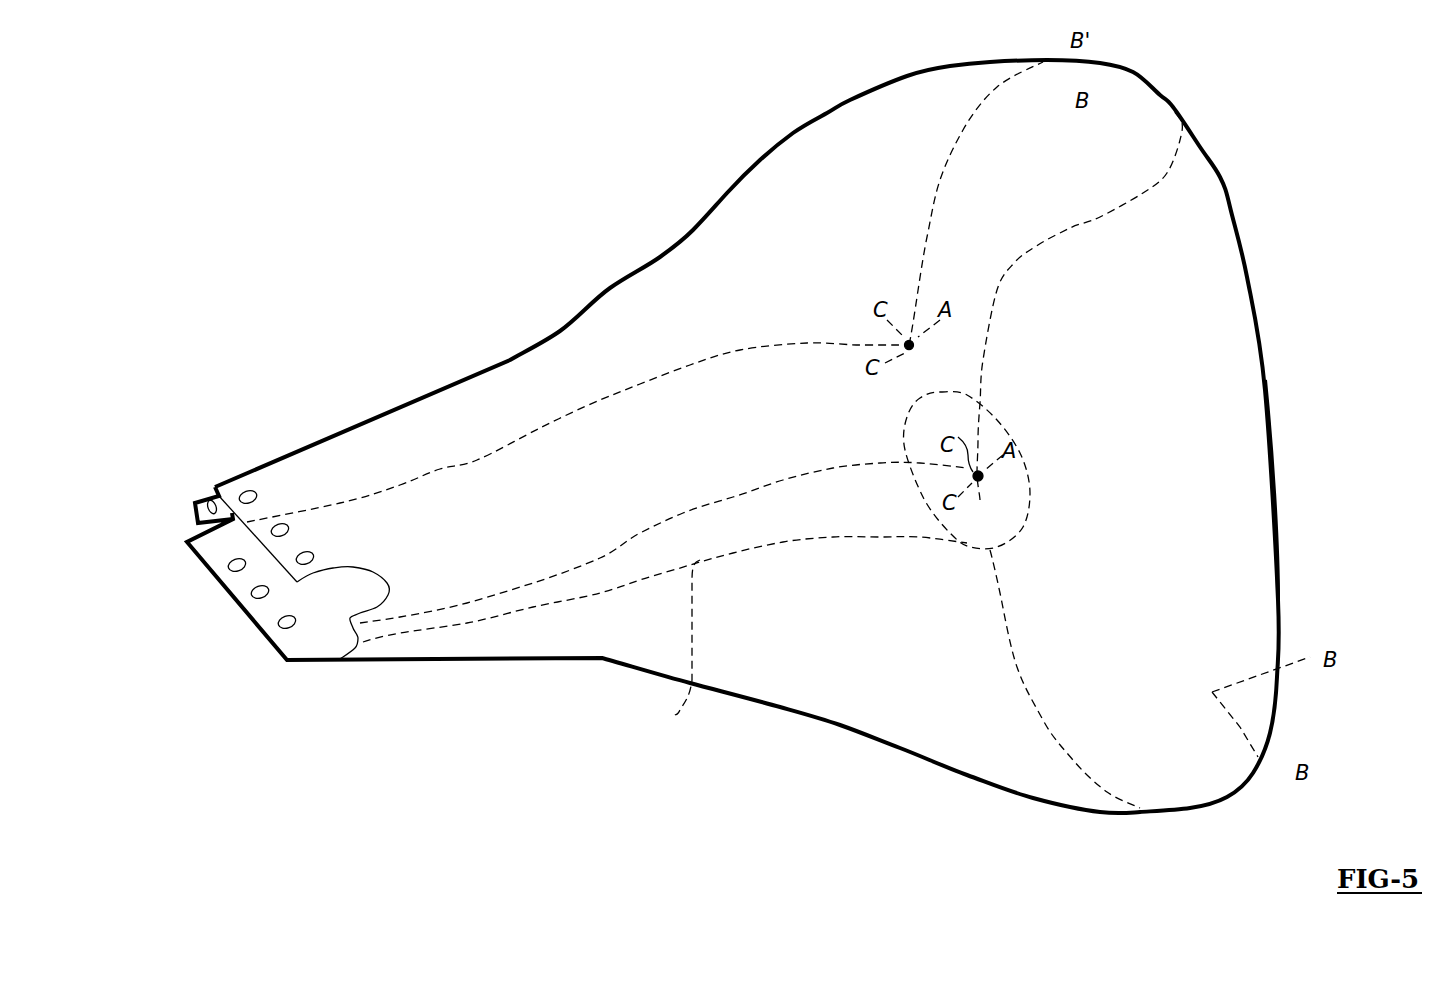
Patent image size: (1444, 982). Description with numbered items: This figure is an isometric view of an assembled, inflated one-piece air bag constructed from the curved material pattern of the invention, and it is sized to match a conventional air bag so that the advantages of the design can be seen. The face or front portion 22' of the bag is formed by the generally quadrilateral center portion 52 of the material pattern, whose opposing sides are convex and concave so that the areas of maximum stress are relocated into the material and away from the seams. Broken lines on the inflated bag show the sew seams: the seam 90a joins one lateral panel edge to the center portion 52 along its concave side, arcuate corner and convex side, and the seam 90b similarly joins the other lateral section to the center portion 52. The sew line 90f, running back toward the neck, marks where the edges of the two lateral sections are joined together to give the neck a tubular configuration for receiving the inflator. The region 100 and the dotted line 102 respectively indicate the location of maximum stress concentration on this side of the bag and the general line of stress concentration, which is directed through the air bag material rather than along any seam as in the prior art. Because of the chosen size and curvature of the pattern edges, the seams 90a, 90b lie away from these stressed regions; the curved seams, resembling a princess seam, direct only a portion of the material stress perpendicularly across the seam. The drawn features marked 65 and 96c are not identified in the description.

The face or front portion 22' is at (733, 436).
The center portion 52 is at (1187, 235).
The cutout 65 is at (385, 588).
The sew seam 90a is at (1038, 245).
The sew seam 90b is at (1013, 647).
The sew line 90f is at (690, 362).
The fold line 96c is at (938, 182).
The region of maximum stress concentration 100 is at (967, 545).
The dotted line of stress concentration 102 is at (677, 713).